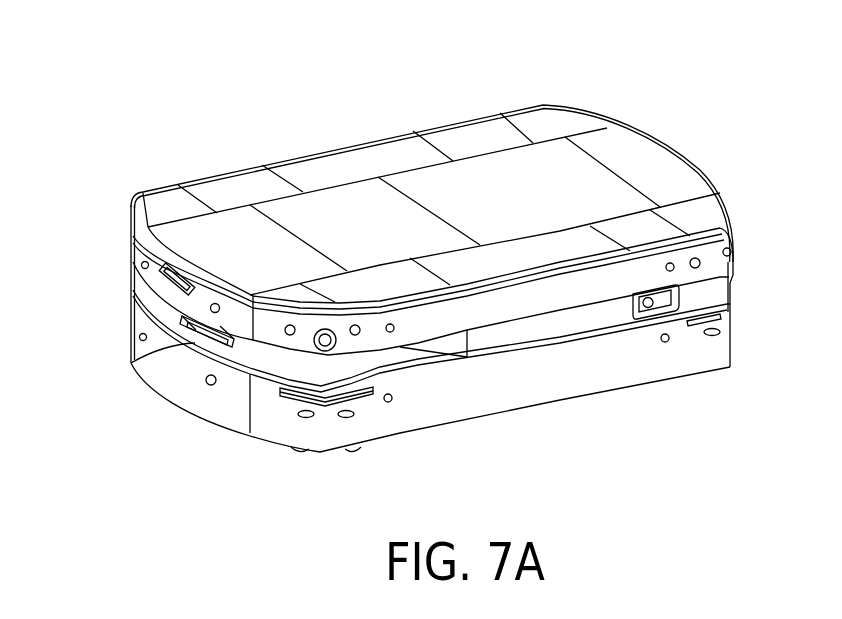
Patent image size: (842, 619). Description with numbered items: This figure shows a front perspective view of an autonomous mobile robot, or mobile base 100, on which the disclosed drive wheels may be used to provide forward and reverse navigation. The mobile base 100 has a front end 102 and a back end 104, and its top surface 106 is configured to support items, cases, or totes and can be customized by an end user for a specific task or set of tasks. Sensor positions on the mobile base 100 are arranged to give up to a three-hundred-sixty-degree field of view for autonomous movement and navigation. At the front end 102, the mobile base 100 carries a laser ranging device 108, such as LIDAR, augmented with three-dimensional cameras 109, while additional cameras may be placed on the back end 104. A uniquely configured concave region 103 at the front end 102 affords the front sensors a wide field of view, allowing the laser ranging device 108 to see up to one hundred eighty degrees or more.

The mobile base 100 is at (167, 75).
The front end 102 is at (131, 229).
The concave region 103 is at (389, 356).
The back end 104 is at (693, 159).
The top surface 106 is at (391, 211).
The laser ranging device 108 is at (131, 364).
The 3D cameras 109 is at (175, 383).